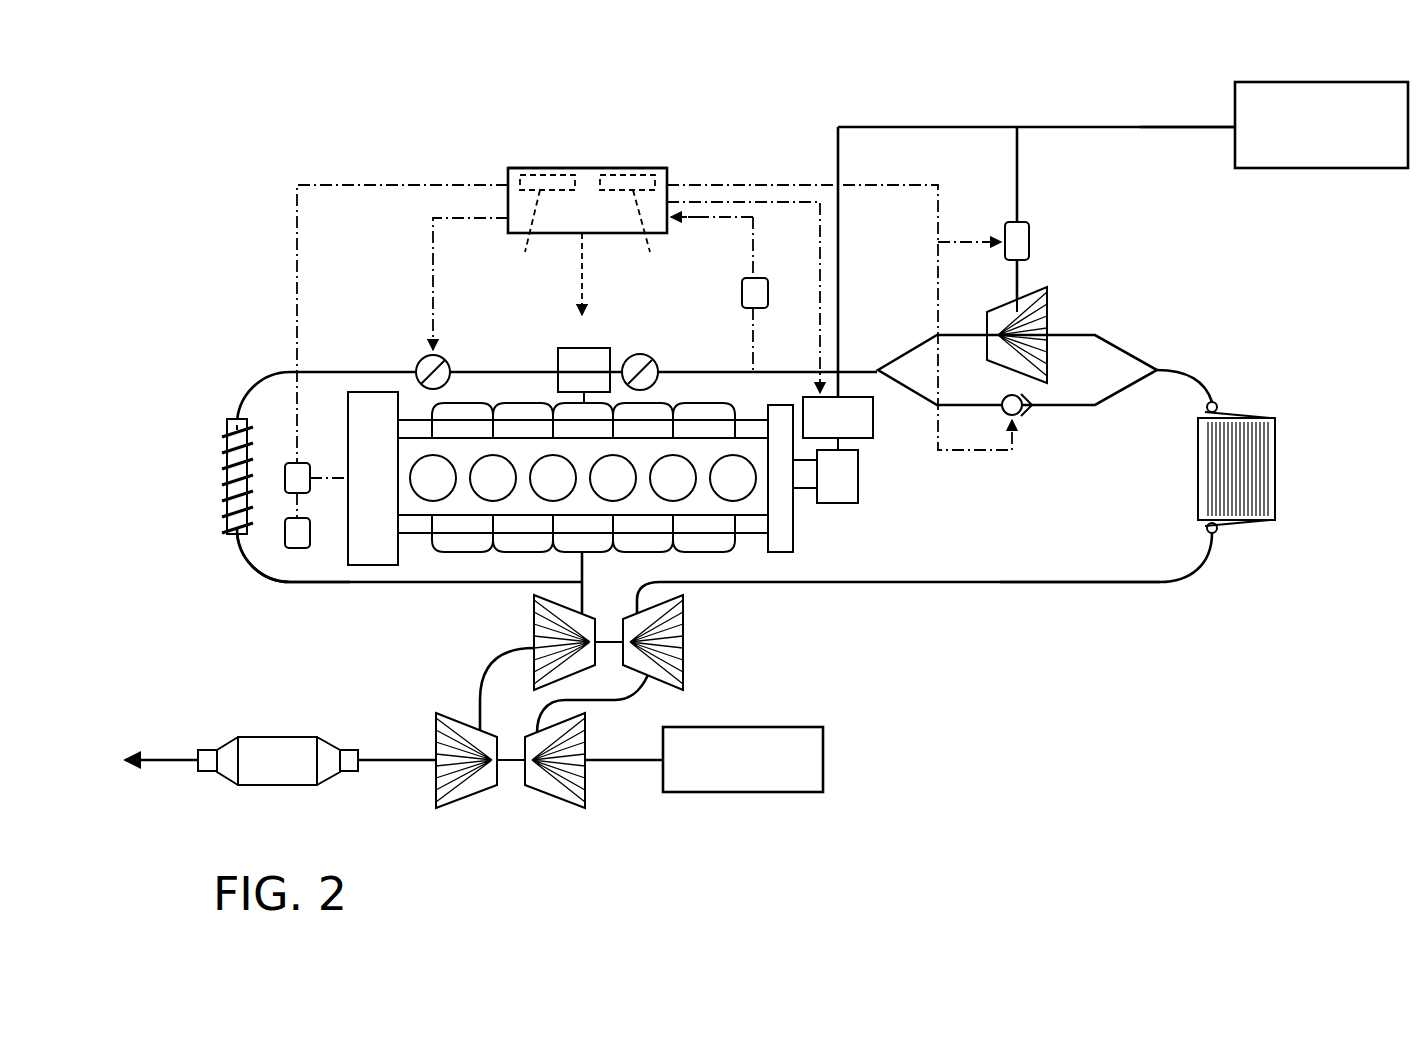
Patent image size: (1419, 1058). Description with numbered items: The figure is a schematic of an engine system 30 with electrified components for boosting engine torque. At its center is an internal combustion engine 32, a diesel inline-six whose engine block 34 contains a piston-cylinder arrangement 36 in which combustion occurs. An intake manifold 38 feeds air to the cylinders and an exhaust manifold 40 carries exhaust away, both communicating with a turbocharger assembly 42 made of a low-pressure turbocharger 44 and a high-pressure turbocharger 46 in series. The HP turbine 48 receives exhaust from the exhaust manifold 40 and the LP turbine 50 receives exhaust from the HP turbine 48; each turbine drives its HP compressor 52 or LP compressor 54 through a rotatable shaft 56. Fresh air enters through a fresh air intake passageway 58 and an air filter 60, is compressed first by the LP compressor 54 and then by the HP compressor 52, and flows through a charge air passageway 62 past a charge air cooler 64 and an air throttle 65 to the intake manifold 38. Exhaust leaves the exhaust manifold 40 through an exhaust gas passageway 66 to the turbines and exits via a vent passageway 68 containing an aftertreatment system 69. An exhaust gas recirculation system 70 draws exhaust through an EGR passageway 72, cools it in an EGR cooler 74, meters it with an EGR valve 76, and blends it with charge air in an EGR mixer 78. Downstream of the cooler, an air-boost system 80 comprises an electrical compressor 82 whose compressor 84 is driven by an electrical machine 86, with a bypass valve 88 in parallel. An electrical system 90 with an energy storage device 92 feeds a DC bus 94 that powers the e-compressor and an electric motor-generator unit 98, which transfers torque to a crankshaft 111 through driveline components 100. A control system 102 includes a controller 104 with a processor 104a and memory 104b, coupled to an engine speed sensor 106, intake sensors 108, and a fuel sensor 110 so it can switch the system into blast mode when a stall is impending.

The engine system 30 is at (1205, 618).
The internal combustion engine 32 is at (410, 560).
The engine block 34 is at (360, 392).
The piston-cylinder arrangement 36 is at (745, 490).
The intake manifold 38 is at (493, 398).
The exhaust manifold 40 is at (498, 563).
The turbocharger assembly 42 is at (462, 685).
The low-pressure turbocharger 44 is at (485, 833).
The high-pressure turbocharger 46 is at (705, 672).
The HP turbine 48 is at (532, 618).
The LP turbine 50 is at (435, 788).
The HP compressor 52 is at (687, 640).
The LP compressor 54 is at (552, 800).
The rotatable shaft 56 is at (608, 642).
The fresh air intake passageway 58 is at (622, 767).
The air filter 60 is at (743, 793).
The charge air passageway 62 is at (778, 370).
The charge air cooler 64 is at (1277, 463).
The air throttle 65 is at (638, 354).
The exhaust gas passageway 66 is at (587, 598).
The vent passageway 68 is at (397, 763).
The aftertreatment system 69 is at (277, 787).
The exhaust gas recirculation system 70 is at (173, 530).
The EGR passageway 72 is at (295, 585).
The EGR cooler 74 is at (225, 448).
The EGR valve 76 is at (418, 362).
The EGR mixer 78 is at (580, 350).
The air-boost system 80 is at (1065, 257).
The electrical compressor 82 is at (992, 290).
The compressor 84 is at (1048, 313).
The electrical machine 86 is at (1003, 232).
The bypass valve 88 is at (1050, 423).
The electrical system 90 is at (1138, 62).
The energy storage device 92 is at (1327, 168).
The DC bus 94 is at (1125, 127).
The electric motor-generator unit 98 is at (873, 417).
The driveline component 100 is at (880, 503).
The control system 102 is at (705, 147).
The controller 104 is at (588, 167).
The processor 104a is at (535, 233).
The memory 104b is at (641, 229).
The engine speed sensor 106 is at (285, 477).
The sensor 108 is at (742, 293).
The fuel sensor 110 is at (294, 550).
The crankshaft 111 is at (805, 490).